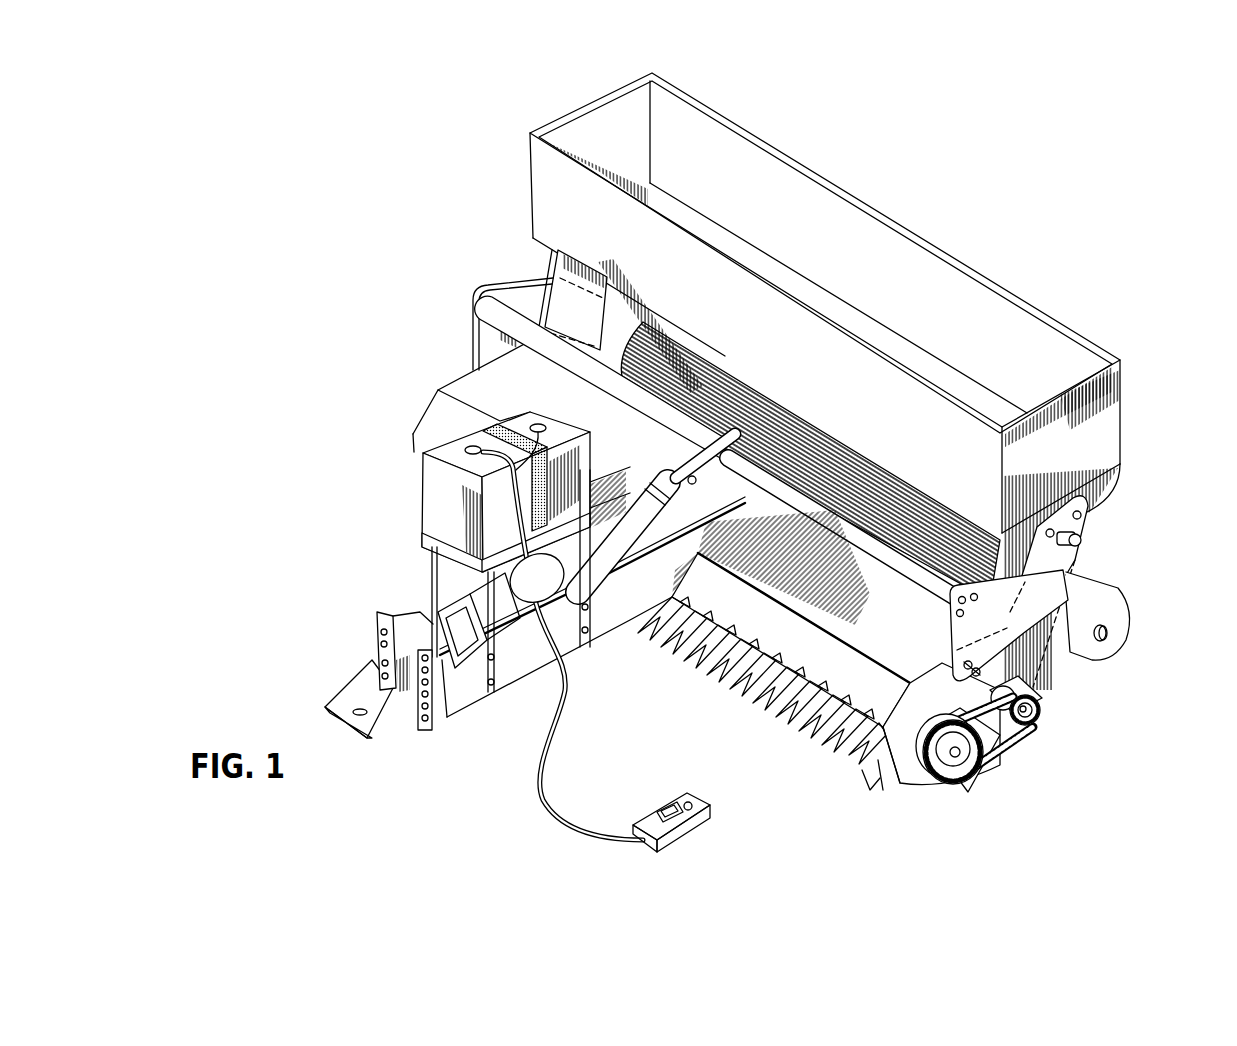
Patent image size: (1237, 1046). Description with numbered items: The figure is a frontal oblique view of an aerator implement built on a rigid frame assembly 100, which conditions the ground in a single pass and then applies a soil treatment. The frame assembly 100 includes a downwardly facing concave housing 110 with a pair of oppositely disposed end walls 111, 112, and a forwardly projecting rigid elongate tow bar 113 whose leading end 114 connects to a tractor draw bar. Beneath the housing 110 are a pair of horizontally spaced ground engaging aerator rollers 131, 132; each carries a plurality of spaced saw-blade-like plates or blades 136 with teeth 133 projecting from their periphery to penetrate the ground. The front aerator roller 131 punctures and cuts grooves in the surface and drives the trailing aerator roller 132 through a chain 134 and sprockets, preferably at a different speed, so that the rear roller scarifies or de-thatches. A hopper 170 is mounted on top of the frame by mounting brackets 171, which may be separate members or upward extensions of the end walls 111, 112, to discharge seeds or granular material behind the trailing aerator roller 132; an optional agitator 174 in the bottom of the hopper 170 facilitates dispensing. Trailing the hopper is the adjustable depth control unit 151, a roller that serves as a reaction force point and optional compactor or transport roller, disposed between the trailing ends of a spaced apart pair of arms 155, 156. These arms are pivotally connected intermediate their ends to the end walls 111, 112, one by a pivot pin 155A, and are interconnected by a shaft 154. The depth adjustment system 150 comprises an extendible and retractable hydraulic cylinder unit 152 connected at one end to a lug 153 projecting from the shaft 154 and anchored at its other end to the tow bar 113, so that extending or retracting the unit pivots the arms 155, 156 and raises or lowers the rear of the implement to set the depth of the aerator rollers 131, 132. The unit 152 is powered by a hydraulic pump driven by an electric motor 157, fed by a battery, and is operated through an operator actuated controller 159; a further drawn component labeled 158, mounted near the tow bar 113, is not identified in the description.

The rigid frame assembly 100 is at (862, 593).
The housing 110 is at (812, 728).
The end wall 111 is at (908, 757).
The end wall 112 is at (423, 453).
The tow bar 113 is at (540, 657).
The leading end 114 is at (372, 703).
The aerator roller 131 is at (966, 772).
The aerator roller 132 is at (1022, 722).
The teeth 133 is at (872, 782).
The chain 134 is at (990, 746).
The plates or blades 136 is at (881, 778).
The depth adjustment system 150 is at (630, 493).
The adjustable depth control unit 151 is at (1080, 572).
The hydraulic cylinder unit 152 is at (560, 642).
The lug 153 is at (713, 458).
The shaft 154 is at (507, 320).
The arm 155 is at (1075, 610).
The pivot pin 155A is at (985, 667).
The arm 156 is at (518, 298).
The electric motor 157 is at (513, 590).
The mounting plate 158 is at (480, 690).
The controller 159 is at (700, 826).
The hopper 170 is at (842, 387).
The mounting brackets 171 is at (567, 300).
The agitator 174 is at (1082, 540).